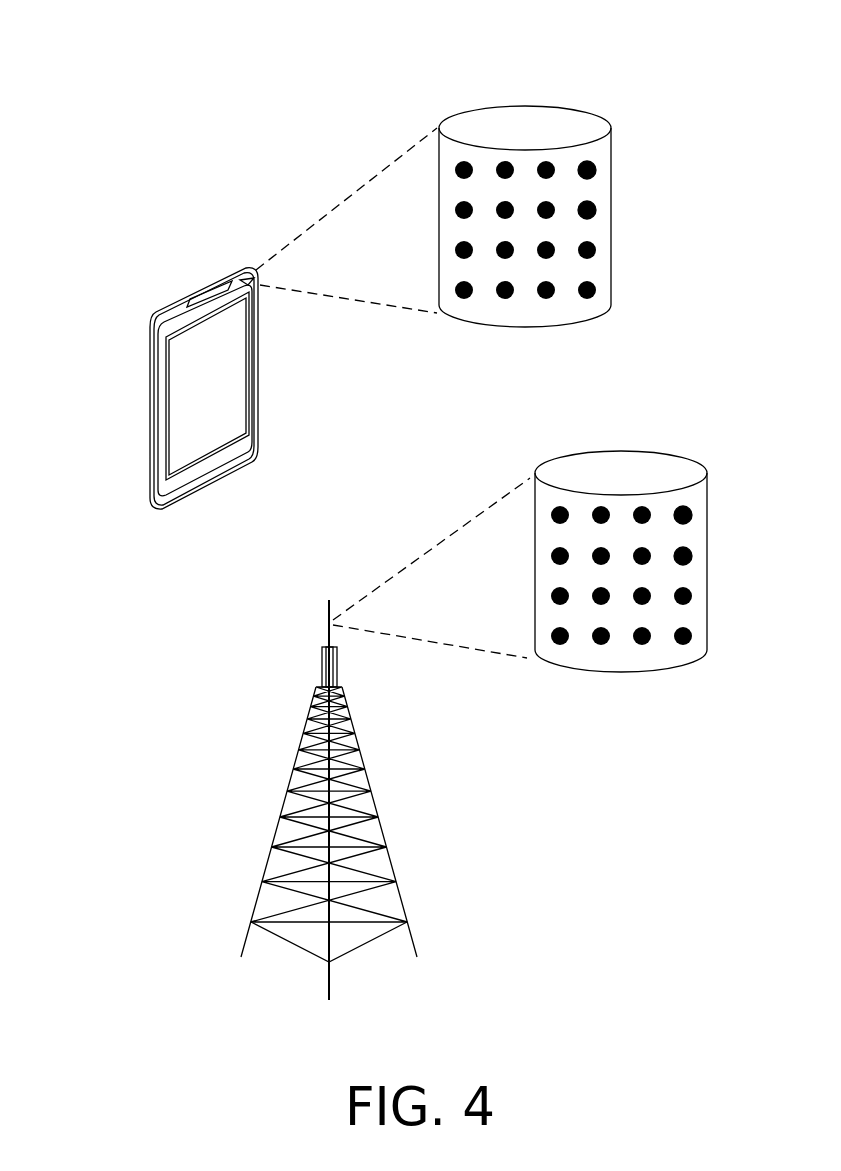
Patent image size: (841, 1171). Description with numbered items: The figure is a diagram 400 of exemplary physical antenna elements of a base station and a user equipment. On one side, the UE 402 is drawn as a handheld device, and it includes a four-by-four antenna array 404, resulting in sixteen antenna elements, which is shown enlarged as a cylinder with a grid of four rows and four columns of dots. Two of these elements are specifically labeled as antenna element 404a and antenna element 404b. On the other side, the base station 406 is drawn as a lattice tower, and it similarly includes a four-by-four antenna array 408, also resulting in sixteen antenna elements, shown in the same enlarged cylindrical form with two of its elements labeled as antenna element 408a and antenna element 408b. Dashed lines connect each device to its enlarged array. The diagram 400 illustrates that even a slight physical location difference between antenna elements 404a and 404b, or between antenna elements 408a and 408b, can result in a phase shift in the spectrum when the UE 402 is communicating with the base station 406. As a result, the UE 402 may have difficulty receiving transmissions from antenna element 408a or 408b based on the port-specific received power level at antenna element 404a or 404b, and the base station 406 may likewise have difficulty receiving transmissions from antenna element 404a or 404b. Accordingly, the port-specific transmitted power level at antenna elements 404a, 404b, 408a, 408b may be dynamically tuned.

The diagram 400 is at (150, 42).
The UE 402 is at (150, 396).
The antenna array 404 is at (565, 197).
The antenna element 404a is at (594, 170).
The antenna element 404b is at (594, 210).
The base station 406 is at (293, 790).
The antenna array 408 is at (660, 542).
The antenna element 408a is at (690, 515).
The antenna element 408b is at (690, 556).